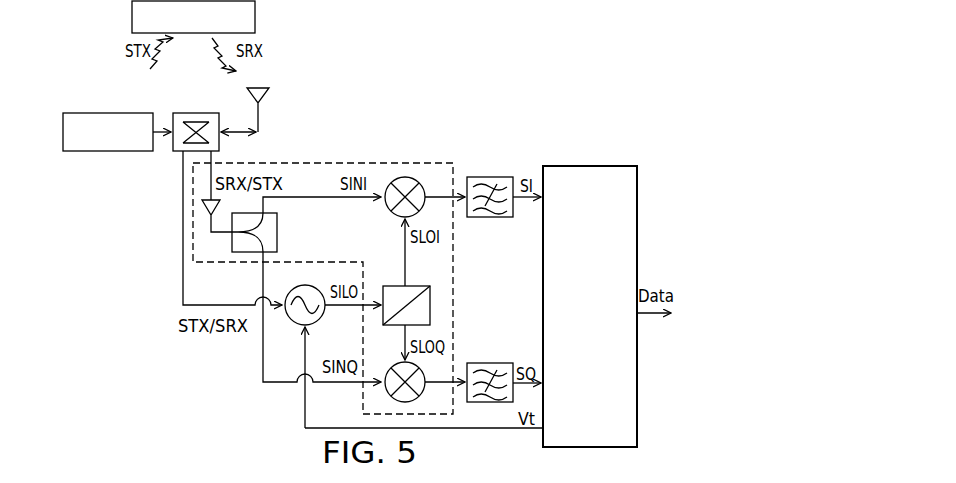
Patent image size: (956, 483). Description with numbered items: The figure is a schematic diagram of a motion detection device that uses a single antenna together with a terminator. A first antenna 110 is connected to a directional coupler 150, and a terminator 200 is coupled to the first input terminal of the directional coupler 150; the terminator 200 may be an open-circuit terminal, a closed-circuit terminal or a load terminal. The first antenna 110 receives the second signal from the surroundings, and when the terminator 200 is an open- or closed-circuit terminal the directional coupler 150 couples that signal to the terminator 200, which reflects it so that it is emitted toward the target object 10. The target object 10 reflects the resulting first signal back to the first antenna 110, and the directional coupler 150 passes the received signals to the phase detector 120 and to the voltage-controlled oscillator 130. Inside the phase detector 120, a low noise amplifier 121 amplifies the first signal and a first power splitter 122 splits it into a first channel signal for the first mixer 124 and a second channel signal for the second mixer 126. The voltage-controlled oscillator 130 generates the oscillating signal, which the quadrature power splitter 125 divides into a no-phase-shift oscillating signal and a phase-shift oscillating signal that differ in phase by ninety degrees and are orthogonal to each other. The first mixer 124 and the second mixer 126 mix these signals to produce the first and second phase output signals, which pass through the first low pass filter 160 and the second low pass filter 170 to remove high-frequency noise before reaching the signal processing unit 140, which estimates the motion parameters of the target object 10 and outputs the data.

The target object 10 is at (255, 16).
The first antenna 110 is at (269, 94).
The phase detector 120 is at (380, 162).
The low noise amplifier 121 is at (200, 212).
The first power splitter 122 is at (279, 233).
The first mixer 124 is at (424, 187).
The quadrature power splitter 125 is at (386, 285).
The second mixer 126 is at (392, 366).
The voltage-controlled oscillator 130 is at (323, 318).
The signal processing unit 140 is at (588, 165).
The directional coupler 150 is at (213, 112).
The first low pass filter 160 is at (498, 176).
The second low pass filter 170 is at (498, 362).
The terminator 200 is at (111, 112).